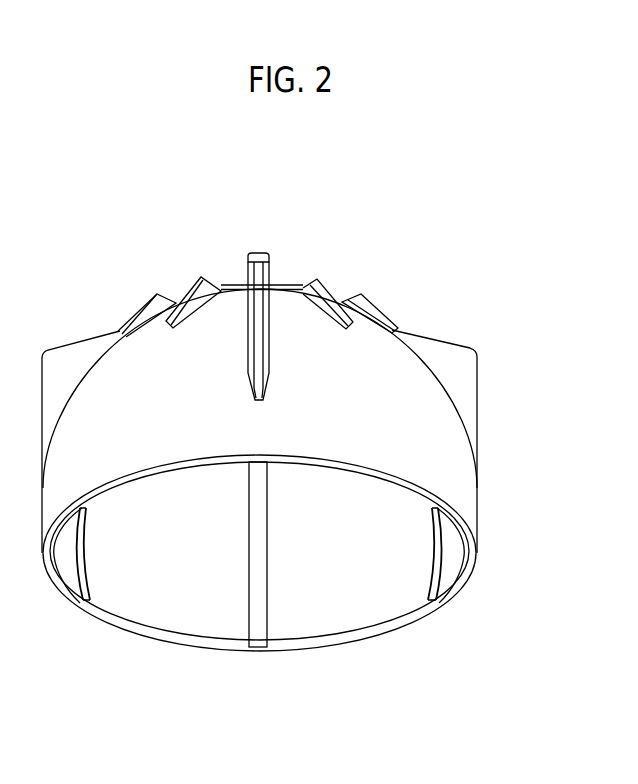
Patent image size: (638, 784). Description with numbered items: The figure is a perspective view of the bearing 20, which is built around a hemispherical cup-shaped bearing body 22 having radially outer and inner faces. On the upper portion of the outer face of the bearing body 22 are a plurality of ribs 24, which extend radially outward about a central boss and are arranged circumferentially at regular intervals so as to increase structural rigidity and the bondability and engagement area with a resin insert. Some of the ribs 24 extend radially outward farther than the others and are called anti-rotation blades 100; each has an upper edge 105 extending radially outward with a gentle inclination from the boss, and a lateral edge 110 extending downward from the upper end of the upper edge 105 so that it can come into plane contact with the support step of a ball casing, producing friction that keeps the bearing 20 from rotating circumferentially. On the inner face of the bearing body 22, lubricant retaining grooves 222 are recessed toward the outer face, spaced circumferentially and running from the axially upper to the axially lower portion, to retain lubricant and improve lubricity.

The bearing 20 is at (166, 190).
The bearing body 22 is at (453, 467).
The ribs 24 is at (357, 304).
The anti-rotation blades 100 is at (261, 253).
The upper edge 105 is at (432, 338).
The lateral edge 110 is at (480, 393).
The lubricant retaining groove 222 is at (257, 623).